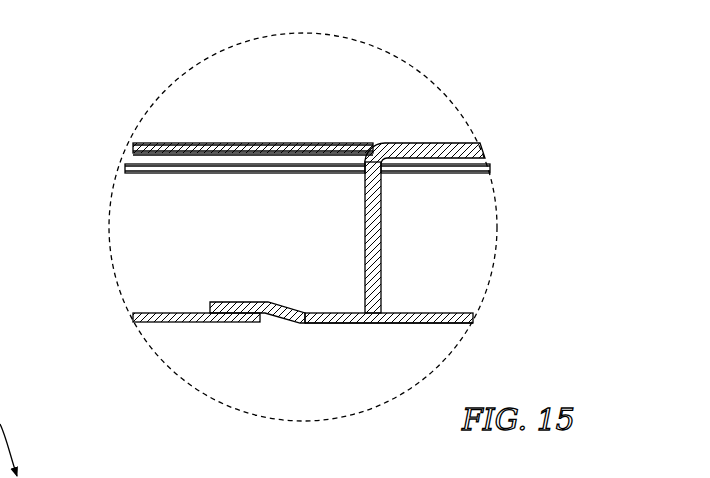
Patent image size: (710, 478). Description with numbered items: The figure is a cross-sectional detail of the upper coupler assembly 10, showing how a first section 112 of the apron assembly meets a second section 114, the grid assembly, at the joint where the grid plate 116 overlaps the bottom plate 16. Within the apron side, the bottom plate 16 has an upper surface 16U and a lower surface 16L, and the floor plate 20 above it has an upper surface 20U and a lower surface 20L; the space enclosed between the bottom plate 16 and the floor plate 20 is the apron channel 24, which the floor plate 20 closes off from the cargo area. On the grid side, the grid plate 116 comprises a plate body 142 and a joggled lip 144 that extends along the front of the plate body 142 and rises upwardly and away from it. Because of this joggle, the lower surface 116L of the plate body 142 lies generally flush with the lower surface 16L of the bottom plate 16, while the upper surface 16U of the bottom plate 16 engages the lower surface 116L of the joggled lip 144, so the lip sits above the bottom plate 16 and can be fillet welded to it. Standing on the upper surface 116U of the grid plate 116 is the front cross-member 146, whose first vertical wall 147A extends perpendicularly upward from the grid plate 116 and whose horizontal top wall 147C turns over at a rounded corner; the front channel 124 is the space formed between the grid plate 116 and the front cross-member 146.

The upper coupler assembly 10 is at (580, 118).
The bottom plate 16 is at (176, 335).
The upper surface of bottom plate 16U is at (165, 313).
The lower surface of bottom plate 16L is at (228, 323).
The floor plate 20 is at (307, 141).
The upper surface of floor plate 20U is at (298, 143).
The lower surface of floor plate 20L is at (235, 156).
The apron channel 24 is at (134, 251).
The first section 112 is at (236, 86).
The grid assembly 114 is at (447, 104).
The grid plate 116 is at (379, 355).
The upper surface of grid plate 116U is at (316, 297).
The lower surface of grid plate 116L is at (372, 326).
The front channel 124 is at (474, 283).
The plate body 142 is at (428, 323).
The joggled lip 144 is at (232, 302).
The front cross-member 146 is at (446, 192).
The first vertical wall 147A is at (382, 226).
The top wall 147C is at (460, 143).